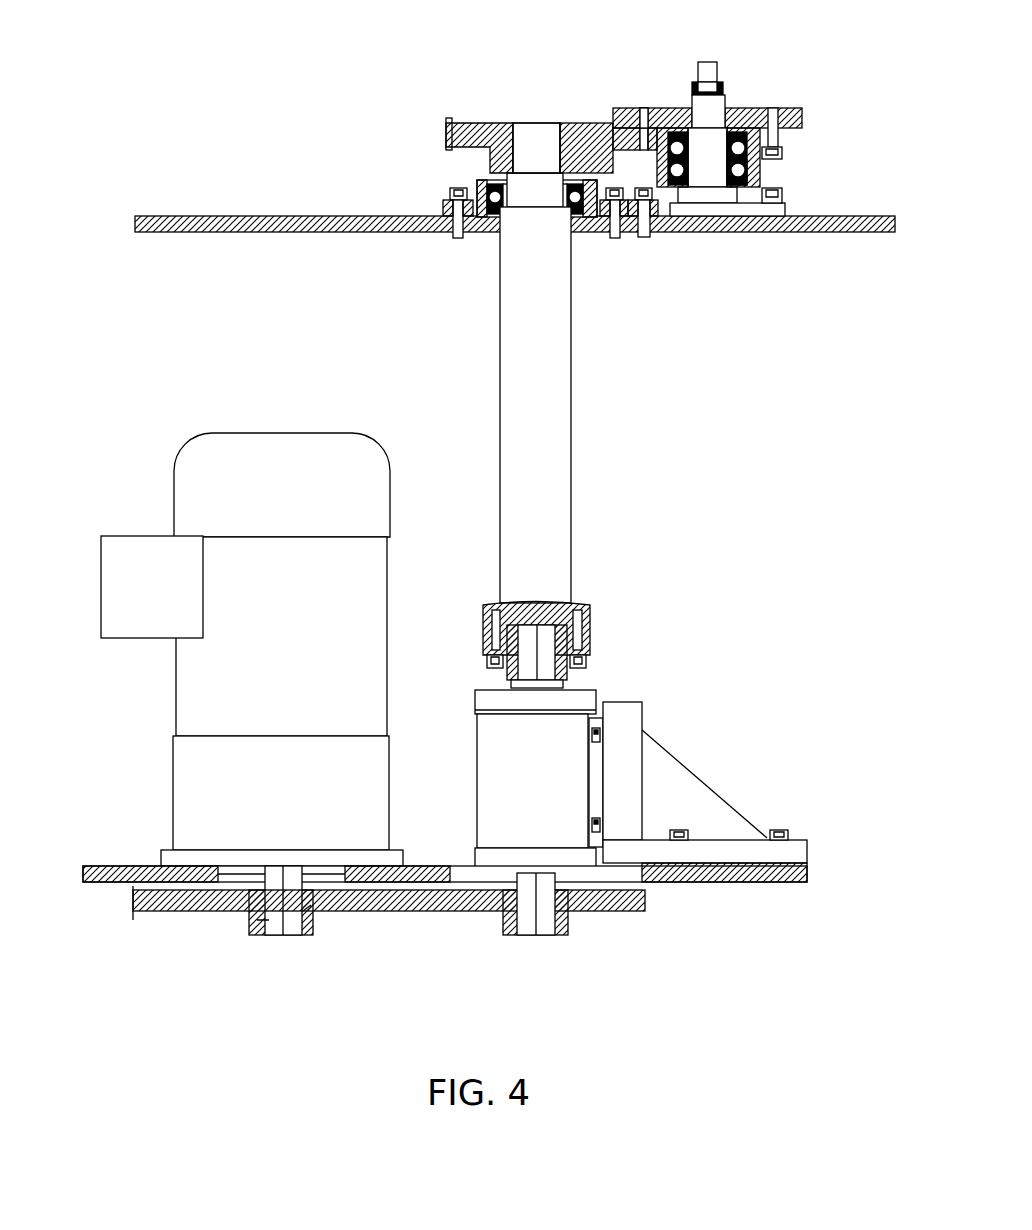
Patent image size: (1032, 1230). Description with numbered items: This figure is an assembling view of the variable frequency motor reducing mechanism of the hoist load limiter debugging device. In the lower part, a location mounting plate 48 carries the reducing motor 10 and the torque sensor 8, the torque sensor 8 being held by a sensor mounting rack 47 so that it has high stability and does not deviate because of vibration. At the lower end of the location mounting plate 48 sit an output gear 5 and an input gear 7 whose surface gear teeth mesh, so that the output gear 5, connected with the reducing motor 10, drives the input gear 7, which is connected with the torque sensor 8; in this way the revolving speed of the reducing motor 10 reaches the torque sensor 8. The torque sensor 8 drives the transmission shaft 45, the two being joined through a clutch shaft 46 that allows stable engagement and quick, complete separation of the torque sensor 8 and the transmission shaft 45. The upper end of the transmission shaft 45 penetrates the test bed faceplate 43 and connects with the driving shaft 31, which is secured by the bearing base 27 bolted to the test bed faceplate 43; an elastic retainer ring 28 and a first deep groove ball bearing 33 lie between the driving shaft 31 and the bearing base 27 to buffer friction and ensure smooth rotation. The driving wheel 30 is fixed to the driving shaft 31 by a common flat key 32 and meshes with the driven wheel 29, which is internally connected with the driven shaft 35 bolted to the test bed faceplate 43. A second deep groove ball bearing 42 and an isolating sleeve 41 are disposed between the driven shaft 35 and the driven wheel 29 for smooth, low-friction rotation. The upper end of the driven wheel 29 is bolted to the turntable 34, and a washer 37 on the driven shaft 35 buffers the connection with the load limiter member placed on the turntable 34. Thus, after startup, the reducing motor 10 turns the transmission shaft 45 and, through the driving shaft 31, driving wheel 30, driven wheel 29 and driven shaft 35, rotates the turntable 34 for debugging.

The output gear 5 is at (320, 902).
The input gear 7 is at (619, 905).
The torque sensor 8 is at (557, 751).
The reducing motor 10 is at (217, 826).
The bearing base 27 is at (456, 190).
The elastic retainer ring 28 is at (480, 177).
The driven wheel 29 is at (665, 183).
The driving wheel 30 is at (503, 123).
The driving shaft 31 is at (524, 165).
The common flat key 32 is at (565, 127).
The first deep groove ball bearing 33 is at (602, 130).
The turntable 34 is at (664, 110).
The driven shaft 35 is at (706, 126).
The washer 37 is at (723, 92).
The isolating sleeve 41 is at (772, 147).
The second deep groove ball bearing 42 is at (762, 172).
The test bed faceplate 43 is at (360, 220).
The transmission shaft 45 is at (545, 440).
The clutch shaft 46 is at (566, 640).
The sensor mounting rack 47 is at (721, 830).
The location mounting plate 48 is at (411, 876).